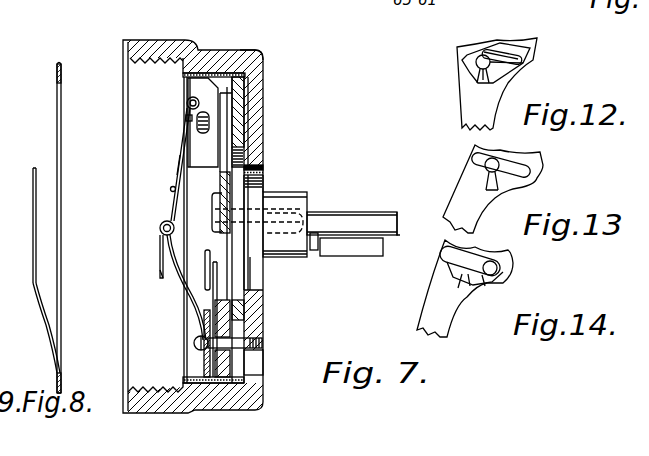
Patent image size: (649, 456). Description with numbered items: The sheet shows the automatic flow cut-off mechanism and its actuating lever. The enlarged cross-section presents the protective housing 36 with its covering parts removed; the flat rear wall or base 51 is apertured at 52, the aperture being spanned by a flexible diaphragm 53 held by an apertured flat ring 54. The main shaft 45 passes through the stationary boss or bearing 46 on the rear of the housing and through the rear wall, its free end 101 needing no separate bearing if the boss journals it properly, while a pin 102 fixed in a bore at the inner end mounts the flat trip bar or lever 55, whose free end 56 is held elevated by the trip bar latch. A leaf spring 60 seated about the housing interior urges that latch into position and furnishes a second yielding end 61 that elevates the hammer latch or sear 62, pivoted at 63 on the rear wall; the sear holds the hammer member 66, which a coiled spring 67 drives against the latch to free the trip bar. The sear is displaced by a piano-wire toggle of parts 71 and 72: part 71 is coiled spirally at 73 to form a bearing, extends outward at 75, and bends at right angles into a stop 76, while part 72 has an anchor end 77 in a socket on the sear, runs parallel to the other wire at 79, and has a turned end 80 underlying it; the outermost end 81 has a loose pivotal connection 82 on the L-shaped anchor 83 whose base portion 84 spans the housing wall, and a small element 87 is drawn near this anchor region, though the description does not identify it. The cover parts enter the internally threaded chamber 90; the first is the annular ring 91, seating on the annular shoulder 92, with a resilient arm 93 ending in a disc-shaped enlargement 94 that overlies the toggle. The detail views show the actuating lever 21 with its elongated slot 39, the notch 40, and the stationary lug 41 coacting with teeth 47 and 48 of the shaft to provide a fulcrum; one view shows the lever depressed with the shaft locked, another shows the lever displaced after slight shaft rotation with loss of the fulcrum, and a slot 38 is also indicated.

In FIG. 12, the actuating lever 21 is at (467, 107).
In FIG. 7, the protective housing 36 is at (253, 52).
In FIG. 12, the slot 38 is at (513, 54).
In FIG. 12, the elongated slot 39 is at (528, 42).
In FIG. 13, the elongated slot 39 is at (523, 173).
In FIG. 14, the elongated slot 39 is at (503, 273).
In FIG. 14, the tooth socket or notch 40 is at (460, 277).
In FIG. 12, the stationary lug 41 is at (507, 80).
In FIG. 13, the stationary lug 41 is at (497, 193).
In FIG. 14, the stationary lug 41 is at (473, 290).
In FIG. 7, the main shaft 45 is at (350, 213).
In FIG. 12, the main shaft 45 is at (486, 54).
In FIG. 13, the main shaft 45 is at (498, 158).
In FIG. 14, the main shaft 45 is at (505, 266).
In FIG. 7, the stationary boss or bearing 46 is at (296, 193).
In FIG. 7, the tooth 47 is at (313, 251).
In FIG. 12, the tooth 47 is at (520, 63).
In FIG. 7, the tooth 48 is at (364, 256).
In FIG. 12, the tooth 48 is at (470, 67).
In FIG. 14, the tooth 48 is at (472, 263).
In FIG. 7, the rear wall or base 51 is at (264, 130).
In FIG. 7, the aperture 52 is at (264, 172).
In FIG. 7, the flexible diaphragm 53 is at (248, 263).
In FIG. 7, the flat ring 54 is at (243, 113).
In FIG. 7, the trip bar or lever 55 is at (231, 122).
In FIG. 7, the free end of trip bar 56 is at (264, 97).
In FIG. 7, the spring 60 is at (220, 50).
In FIG. 7, the second yielding end of spring 61 is at (258, 401).
In FIG. 7, the hammer latch or sear 62 is at (256, 362).
In FIG. 7, the pivotal mounting of sear 63 is at (263, 343).
In FIG. 7, the hammer member 66 is at (249, 186).
In FIG. 7, the coiled spring 67 is at (203, 280).
In FIG. 7, the toggle part 71 is at (172, 162).
In FIG. 7, the toggle part 72 is at (192, 310).
In FIG. 7, the spiral bearing 73 is at (176, 223).
In FIG. 7, the outward extension of toggle part 75 is at (161, 251).
In FIG. 7, the stop or abutment 76 is at (162, 274).
In FIG. 7, the anchor end 77 is at (246, 372).
In FIG. 7, the parallel extension of toggle wire 79 is at (176, 205).
In FIG. 7, the turned end 80 is at (170, 189).
In FIG. 7, the outermost end of toggle element 81 is at (185, 118).
In FIG. 7, the loose pivotal connection 82 is at (187, 104).
In FIG. 7, the anchor 83 is at (196, 90).
In FIG. 7, the base portion of anchor 84 is at (193, 149).
In FIG. 7, the spring 87 is at (197, 132).
In FIG. 7, the internally threaded chamber 90 is at (146, 378).
In FIG. 8, the annular ring 91 is at (62, 319).
In FIG. 7, the annular shoulder 92 is at (170, 60).
In FIG. 8, the resilient arm 93 is at (42, 310).
In FIG. 8, the disc-shaped enlargement 94 is at (33, 262).
In FIG. 7, the free end of main shaft 101 is at (398, 222).
In FIG. 7, the pin 102 is at (305, 210).